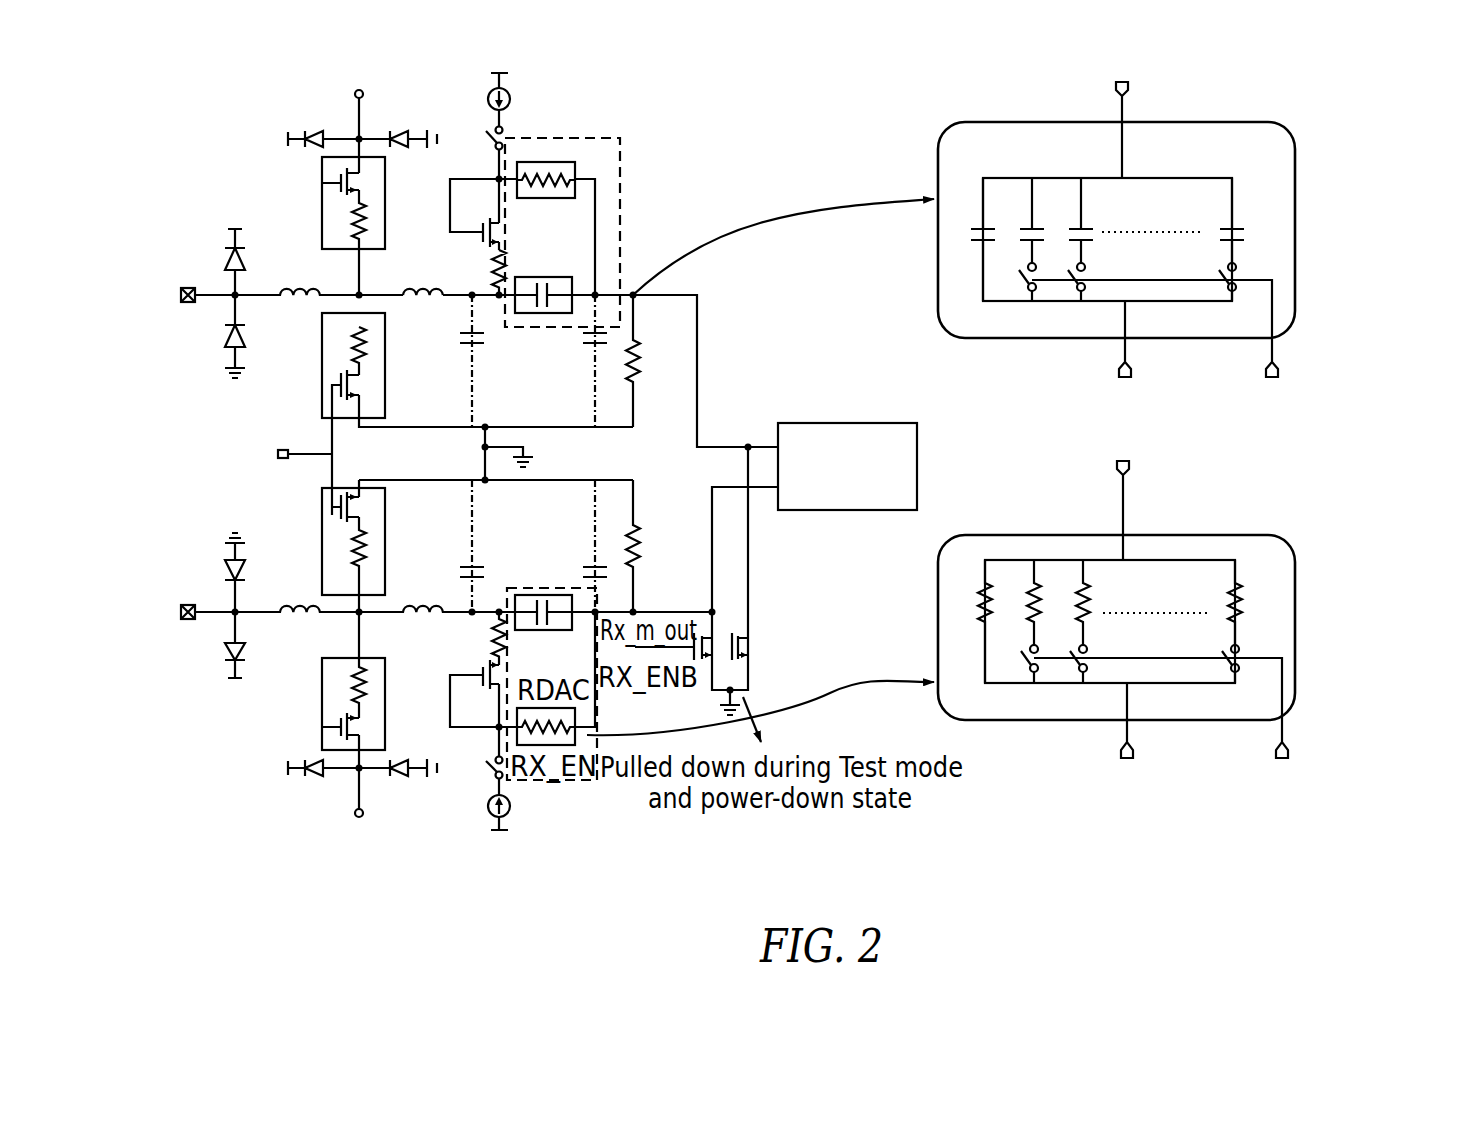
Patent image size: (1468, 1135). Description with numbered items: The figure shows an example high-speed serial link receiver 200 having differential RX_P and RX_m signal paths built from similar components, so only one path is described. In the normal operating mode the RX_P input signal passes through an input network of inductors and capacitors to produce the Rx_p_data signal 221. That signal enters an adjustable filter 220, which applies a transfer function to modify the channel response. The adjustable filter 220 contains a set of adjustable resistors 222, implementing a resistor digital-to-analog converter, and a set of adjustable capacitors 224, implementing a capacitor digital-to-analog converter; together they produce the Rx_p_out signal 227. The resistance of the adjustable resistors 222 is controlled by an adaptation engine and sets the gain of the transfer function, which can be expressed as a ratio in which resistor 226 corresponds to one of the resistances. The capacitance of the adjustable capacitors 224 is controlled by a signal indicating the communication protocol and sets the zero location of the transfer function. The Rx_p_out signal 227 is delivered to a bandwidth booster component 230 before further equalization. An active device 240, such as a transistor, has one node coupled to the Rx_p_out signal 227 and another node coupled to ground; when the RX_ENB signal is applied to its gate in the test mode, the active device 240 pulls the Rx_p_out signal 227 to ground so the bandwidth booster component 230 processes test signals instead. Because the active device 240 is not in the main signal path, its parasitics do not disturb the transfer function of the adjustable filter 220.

The high-speed serial link receiver 200 is at (199, 91).
The adjustable filter 220 is at (603, 138).
The Rx_p_data signal 221 is at (467, 257).
The adjustable resistors 222 is at (573, 170).
The adjustable capacitors 224 is at (567, 278).
The resistor 226 is at (505, 252).
The Rx_p_out signal 227 is at (637, 293).
The bandwidth booster component 230 is at (807, 423).
The active device 240 is at (745, 634).